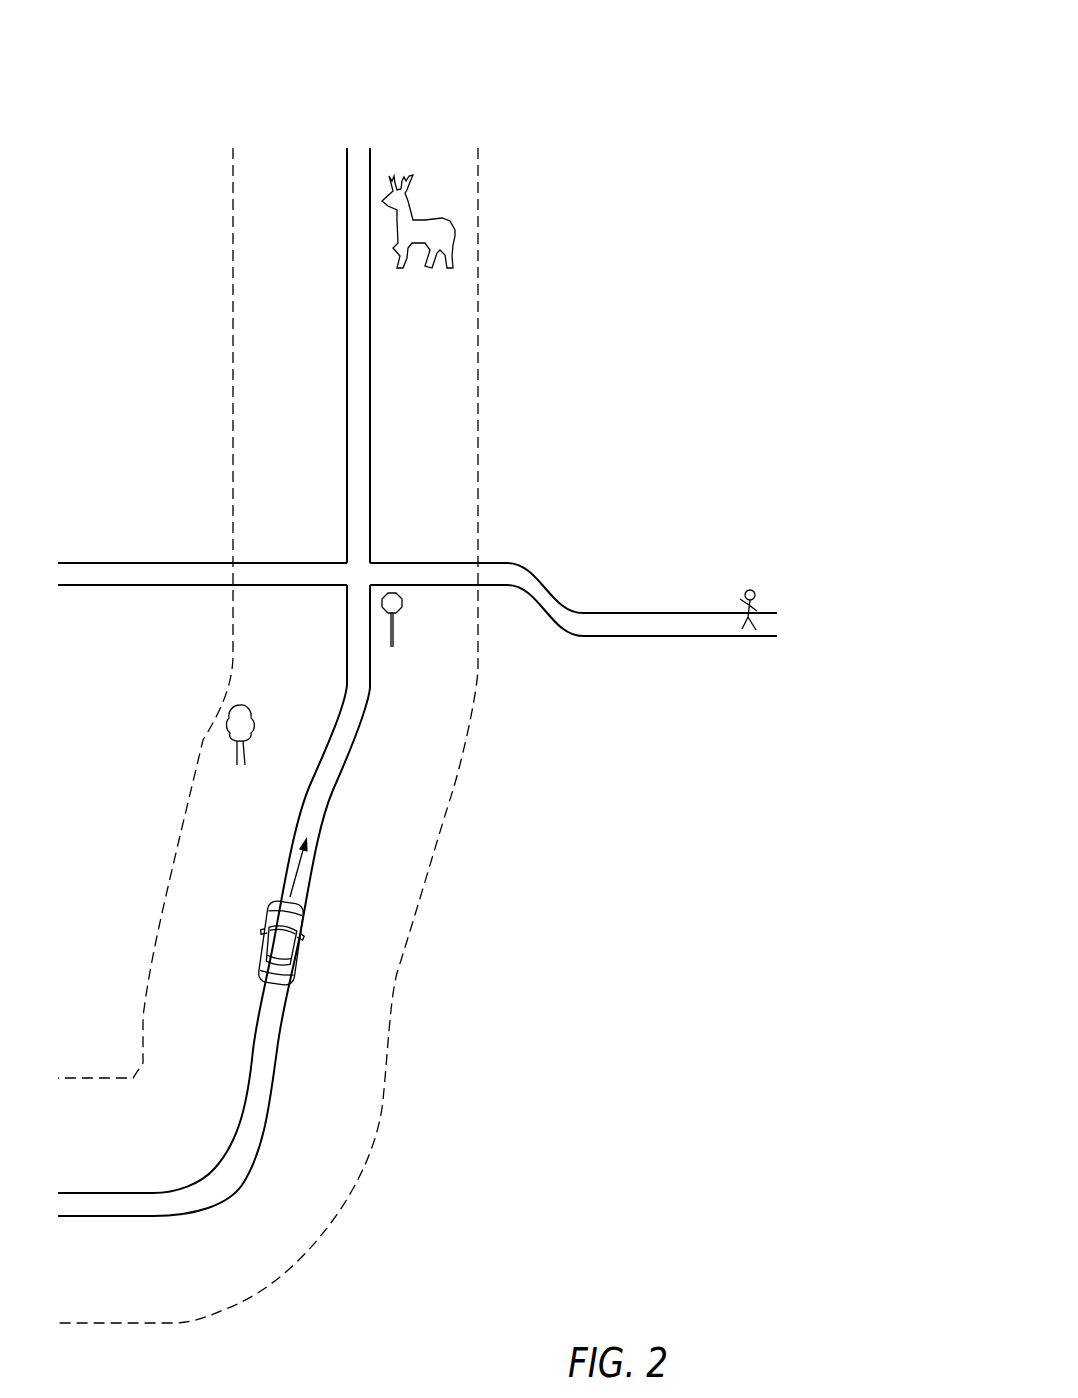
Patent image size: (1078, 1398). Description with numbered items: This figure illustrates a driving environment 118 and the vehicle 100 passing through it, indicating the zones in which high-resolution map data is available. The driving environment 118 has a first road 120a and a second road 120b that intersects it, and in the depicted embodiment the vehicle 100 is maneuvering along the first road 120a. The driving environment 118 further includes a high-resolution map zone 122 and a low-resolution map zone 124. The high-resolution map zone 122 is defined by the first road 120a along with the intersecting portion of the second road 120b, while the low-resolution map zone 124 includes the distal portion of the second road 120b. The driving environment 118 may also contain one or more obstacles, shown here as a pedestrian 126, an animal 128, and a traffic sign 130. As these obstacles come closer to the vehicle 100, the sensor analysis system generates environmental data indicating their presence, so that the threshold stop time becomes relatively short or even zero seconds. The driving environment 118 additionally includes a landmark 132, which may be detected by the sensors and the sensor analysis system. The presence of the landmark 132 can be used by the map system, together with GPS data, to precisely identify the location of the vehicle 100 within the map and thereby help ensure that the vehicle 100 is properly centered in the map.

The vehicle 100 is at (263, 940).
The driving environment 118 is at (515, 70).
The first road 120a is at (363, 718).
The second road 120b is at (641, 612).
The high-resolution map zone 122 is at (293, 190).
The low-resolution map zone 124 is at (108, 275).
The pedestrian 126 is at (757, 597).
The animal 128 is at (442, 216).
The traffic sign 130 is at (402, 600).
The landmark 132 is at (250, 712).